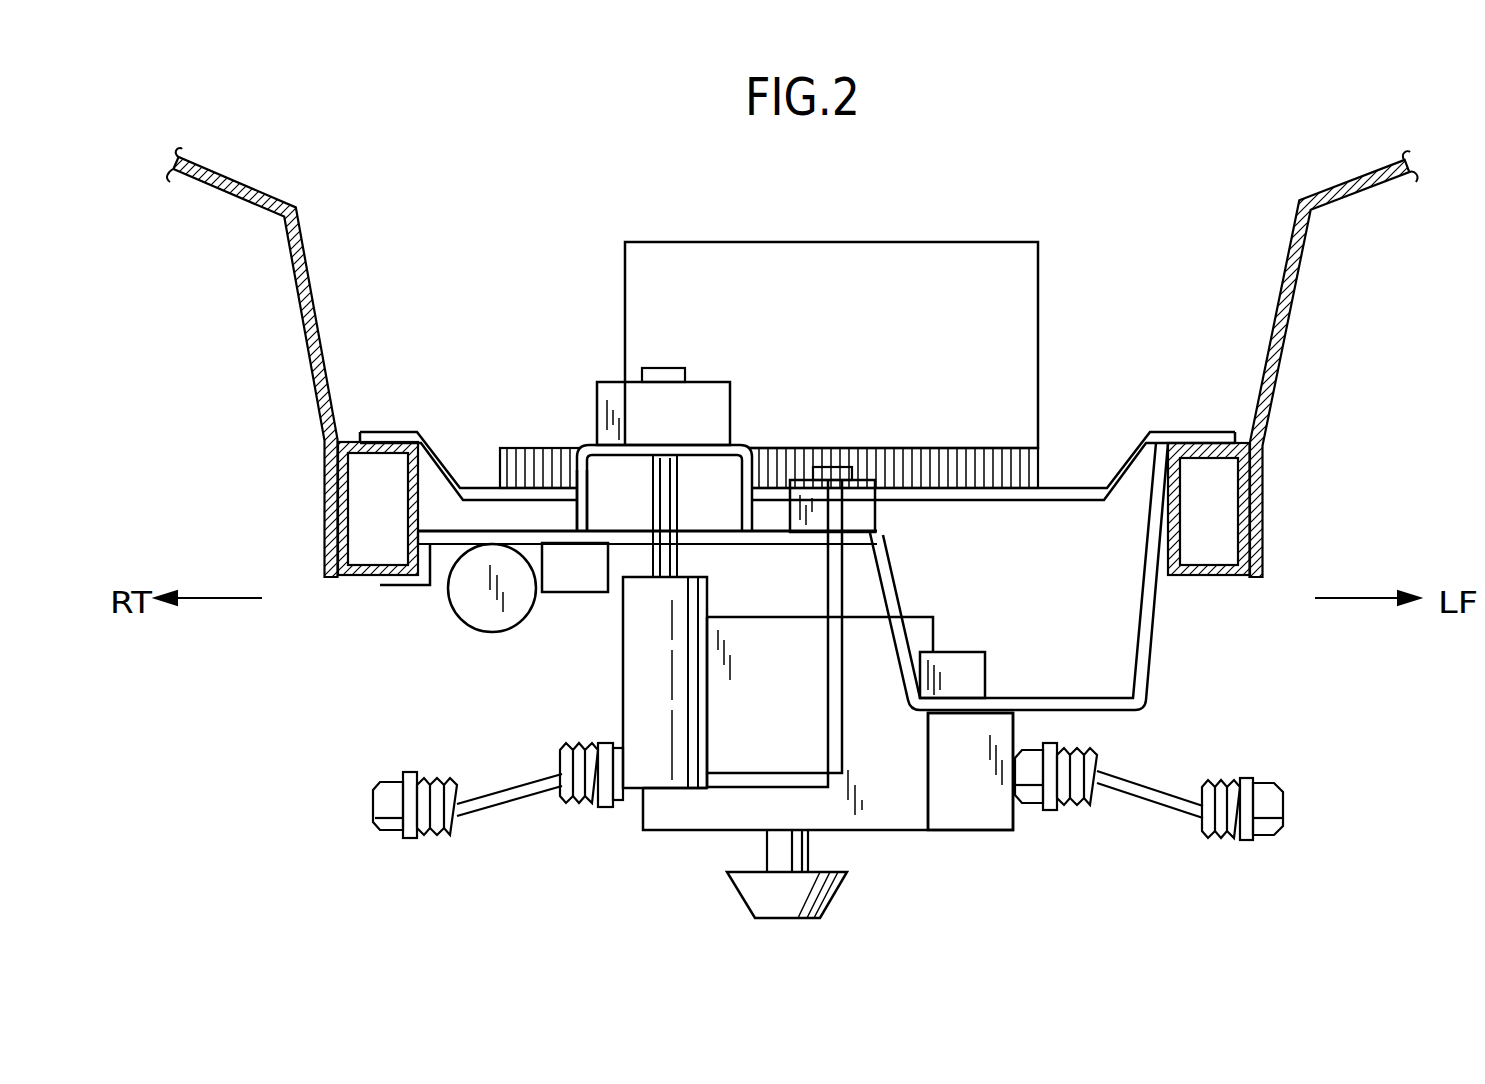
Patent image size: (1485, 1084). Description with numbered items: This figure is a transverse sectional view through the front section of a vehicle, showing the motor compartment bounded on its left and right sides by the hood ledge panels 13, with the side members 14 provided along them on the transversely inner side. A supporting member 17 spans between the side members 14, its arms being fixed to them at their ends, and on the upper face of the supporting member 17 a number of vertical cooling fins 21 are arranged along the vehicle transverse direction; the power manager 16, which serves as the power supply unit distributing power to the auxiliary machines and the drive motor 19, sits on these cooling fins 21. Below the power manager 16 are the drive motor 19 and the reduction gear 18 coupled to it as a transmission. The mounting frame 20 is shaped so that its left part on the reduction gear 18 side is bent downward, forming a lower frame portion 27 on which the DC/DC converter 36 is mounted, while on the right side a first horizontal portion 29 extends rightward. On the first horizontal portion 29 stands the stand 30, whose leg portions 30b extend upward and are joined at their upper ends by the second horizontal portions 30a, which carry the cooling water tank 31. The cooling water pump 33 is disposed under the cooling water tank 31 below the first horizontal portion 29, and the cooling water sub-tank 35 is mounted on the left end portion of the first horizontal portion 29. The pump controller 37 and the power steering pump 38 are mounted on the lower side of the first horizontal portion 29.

The hood ledge panel 13 is at (307, 327).
The side member 14 is at (365, 522).
The power manager 16 is at (995, 340).
The supporting member 17 is at (403, 430).
The reduction gear 18 is at (970, 797).
The drive motor 19 is at (665, 808).
The mounting frame 20 is at (1168, 646).
The cooling fin 21 is at (1010, 470).
The lower frame portion 27 is at (1110, 712).
The first horizontal portion 29 is at (490, 530).
The stand 30 is at (583, 432).
The second horizontal portion 30a is at (662, 450).
The leg portion 30b is at (582, 508).
The cooling water tank 31 is at (690, 370).
The cooling water pump 33 is at (633, 658).
The cooling water sub-tank 35 is at (860, 480).
The DC/DC converter 36 is at (955, 665).
The pump controller 37 is at (560, 596).
The power steering pump 38 is at (465, 598).